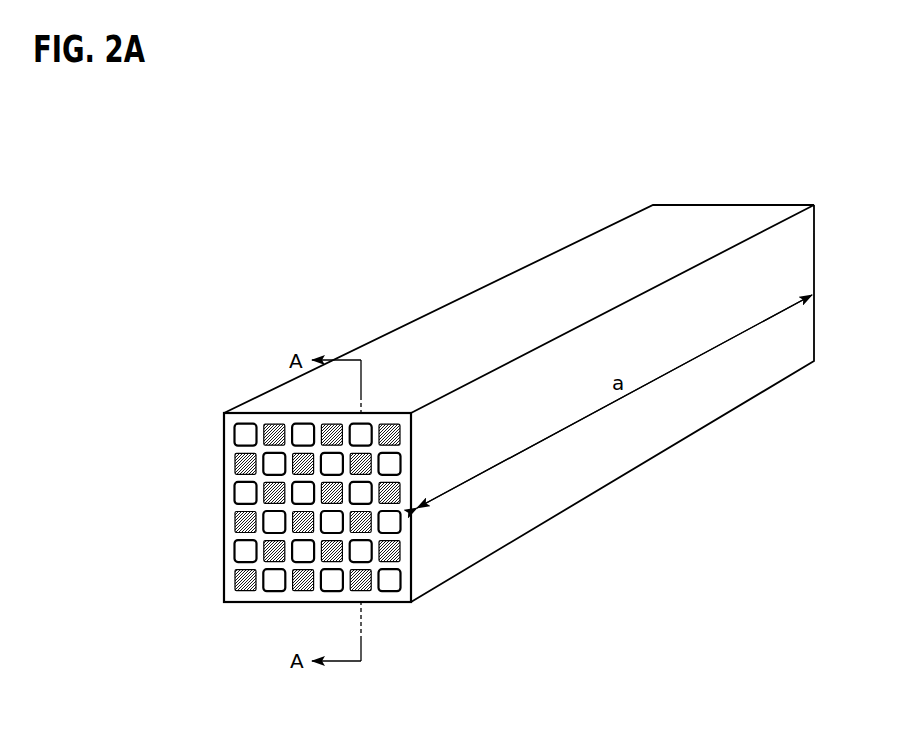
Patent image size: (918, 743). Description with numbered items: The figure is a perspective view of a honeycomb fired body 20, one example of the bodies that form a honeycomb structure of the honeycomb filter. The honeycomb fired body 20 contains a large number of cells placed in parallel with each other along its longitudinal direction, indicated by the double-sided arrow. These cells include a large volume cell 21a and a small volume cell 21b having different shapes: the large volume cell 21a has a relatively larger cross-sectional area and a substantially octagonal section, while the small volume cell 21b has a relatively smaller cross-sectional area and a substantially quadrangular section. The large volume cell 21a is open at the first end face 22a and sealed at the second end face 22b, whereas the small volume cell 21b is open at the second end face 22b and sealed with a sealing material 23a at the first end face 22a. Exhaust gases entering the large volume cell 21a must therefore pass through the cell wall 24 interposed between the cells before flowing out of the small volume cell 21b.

The honeycomb fired body 20 is at (425, 267).
The large volume cell 21a is at (275, 590).
The small volume cell 21b is at (242, 584).
The first end face 22a is at (228, 450).
The second end face 22b is at (737, 205).
The sealing material 23a is at (242, 525).
The cell wall 24 is at (387, 565).